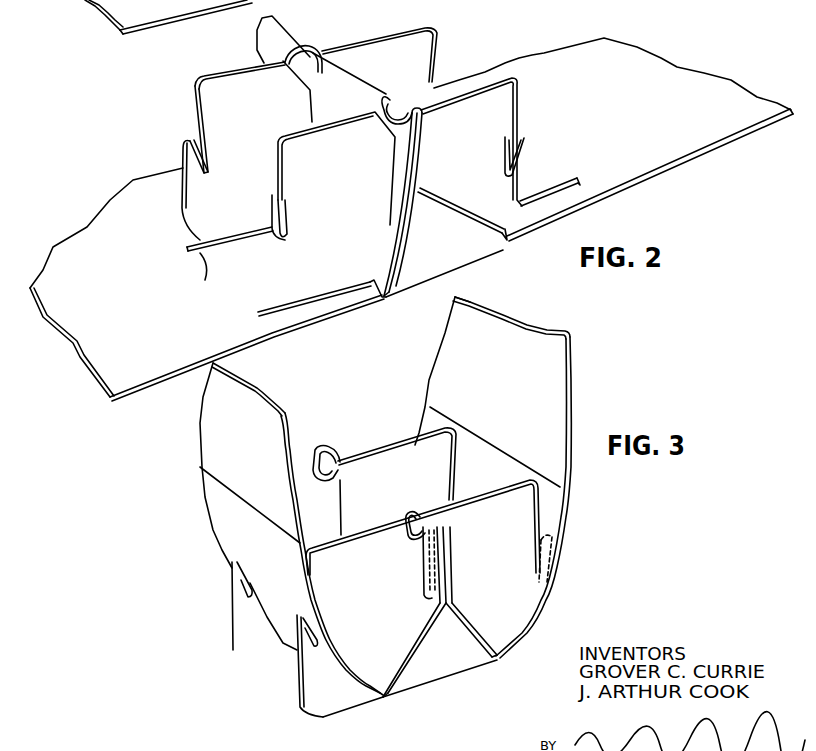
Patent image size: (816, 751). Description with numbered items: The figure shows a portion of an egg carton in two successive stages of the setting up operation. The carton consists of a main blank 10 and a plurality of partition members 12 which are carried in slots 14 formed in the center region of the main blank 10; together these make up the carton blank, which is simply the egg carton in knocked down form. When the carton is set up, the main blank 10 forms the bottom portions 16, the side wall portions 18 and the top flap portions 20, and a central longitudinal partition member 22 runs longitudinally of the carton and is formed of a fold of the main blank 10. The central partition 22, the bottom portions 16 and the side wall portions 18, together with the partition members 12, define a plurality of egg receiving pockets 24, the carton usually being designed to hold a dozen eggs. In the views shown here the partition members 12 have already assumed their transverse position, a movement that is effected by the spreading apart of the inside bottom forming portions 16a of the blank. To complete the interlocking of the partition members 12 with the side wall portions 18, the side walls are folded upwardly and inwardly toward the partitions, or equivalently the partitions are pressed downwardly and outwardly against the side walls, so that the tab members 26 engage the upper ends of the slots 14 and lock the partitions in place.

In FIG. 2, the main blank 10 is at (683, 96).
In FIG. 3, the partition members 12 is at (510, 487).
In FIG. 2, the slots 14 is at (557, 177).
In FIG. 3, the slots 14 is at (520, 597).
In FIG. 2, the bottom portions 16 is at (383, 300).
In FIG. 3, the bottom portions 16 is at (383, 700).
In FIG. 2, the inside bottom forming portions 16a is at (405, 243).
In FIG. 3, the inside bottom forming portions 16a is at (467, 643).
In FIG. 2, the side wall portions 18 is at (612, 192).
In FIG. 3, the side wall portions 18 is at (253, 543).
In FIG. 3, the top flap portions 20 is at (298, 415).
In FIG. 2, the central longitudinal partition member 22 is at (353, 80).
In FIG. 3, the central longitudinal partition member 22 is at (452, 562).
In FIG. 3, the egg receiving pockets 24 is at (402, 468).
In FIG. 3, the tab members 26 is at (300, 627).